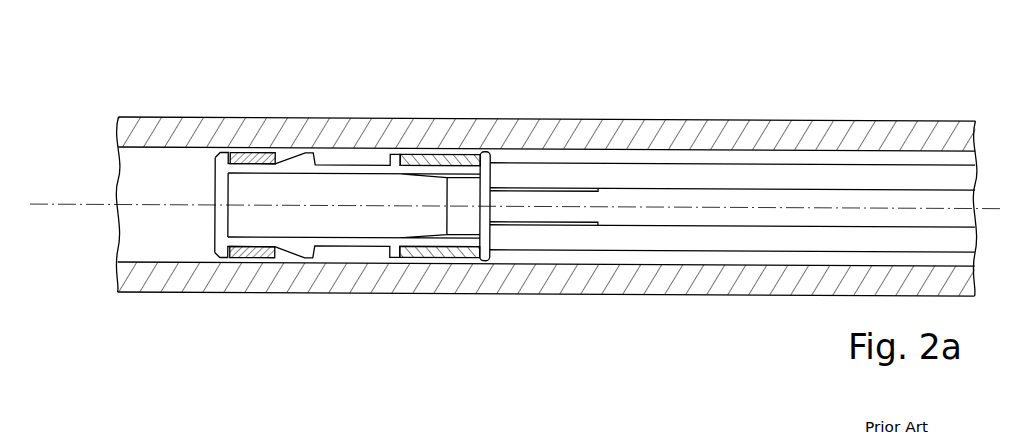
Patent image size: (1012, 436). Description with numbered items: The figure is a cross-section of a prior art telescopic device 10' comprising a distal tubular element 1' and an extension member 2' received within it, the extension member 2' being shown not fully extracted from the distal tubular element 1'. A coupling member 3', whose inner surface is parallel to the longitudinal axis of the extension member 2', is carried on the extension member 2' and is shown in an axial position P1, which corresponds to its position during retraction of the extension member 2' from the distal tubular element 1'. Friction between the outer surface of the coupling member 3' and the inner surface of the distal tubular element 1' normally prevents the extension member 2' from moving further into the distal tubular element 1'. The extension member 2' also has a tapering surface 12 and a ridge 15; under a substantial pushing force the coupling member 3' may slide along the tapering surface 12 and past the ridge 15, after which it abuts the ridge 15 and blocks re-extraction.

The telescopic device 10' is at (515, 119).
The distal tubular element 1' is at (547, 165).
The extension member 2' is at (700, 152).
The tapering surface 12 is at (288, 157).
The ridge 15 is at (278, 167).
The axial position P1 is at (236, 150).
The coupling member 3' is at (228, 307).